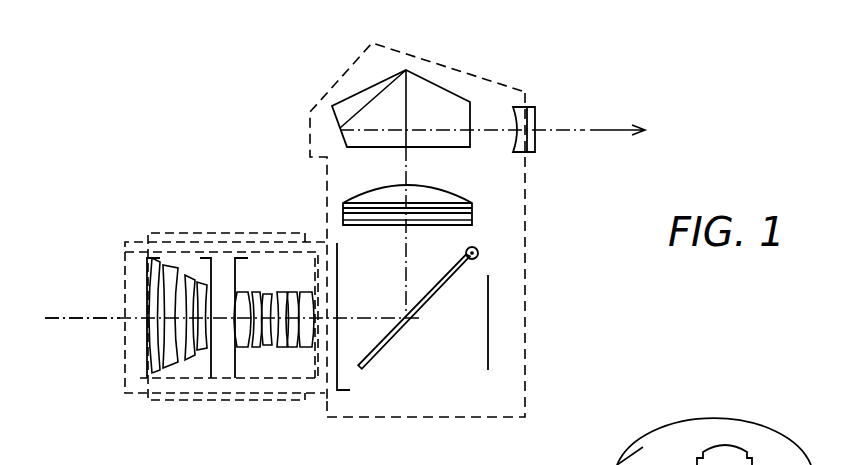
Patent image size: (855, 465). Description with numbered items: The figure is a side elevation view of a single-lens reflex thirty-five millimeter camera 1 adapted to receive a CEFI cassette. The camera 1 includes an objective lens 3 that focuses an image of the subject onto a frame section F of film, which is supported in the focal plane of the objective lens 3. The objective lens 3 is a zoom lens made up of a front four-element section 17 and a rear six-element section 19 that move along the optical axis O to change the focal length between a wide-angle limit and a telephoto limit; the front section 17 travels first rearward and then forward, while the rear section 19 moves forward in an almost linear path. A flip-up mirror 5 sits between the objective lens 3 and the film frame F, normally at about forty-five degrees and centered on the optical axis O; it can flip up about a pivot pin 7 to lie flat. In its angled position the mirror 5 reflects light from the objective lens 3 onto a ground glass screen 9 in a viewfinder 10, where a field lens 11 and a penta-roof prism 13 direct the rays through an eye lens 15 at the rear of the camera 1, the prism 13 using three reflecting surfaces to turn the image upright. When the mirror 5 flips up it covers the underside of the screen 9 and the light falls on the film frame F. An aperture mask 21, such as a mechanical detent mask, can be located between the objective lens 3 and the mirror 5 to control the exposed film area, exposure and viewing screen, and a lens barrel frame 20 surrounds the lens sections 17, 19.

The single-lens reflex camera 1 is at (525, 340).
The objective lens 3 is at (124, 357).
The flip-up mirror 5 is at (398, 345).
The pivot pin 7 is at (466, 253).
The ground glass screen 9 is at (458, 225).
The viewfinder 10 is at (313, 123).
The field lens 11 is at (445, 195).
The penta-roof prism 13 is at (389, 72).
The eye lens 15 is at (537, 118).
The front four-element section 17 is at (192, 258).
The rear six-element section 19 is at (272, 258).
The lens barrel frame 20 is at (183, 400).
The aperture mask 21 is at (337, 383).
The optical axis O is at (72, 315).
The film frame F is at (487, 358).